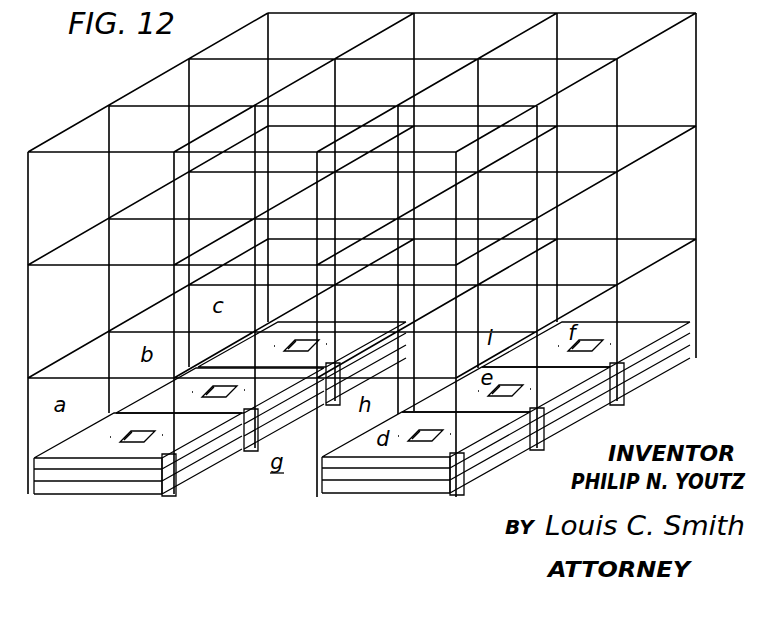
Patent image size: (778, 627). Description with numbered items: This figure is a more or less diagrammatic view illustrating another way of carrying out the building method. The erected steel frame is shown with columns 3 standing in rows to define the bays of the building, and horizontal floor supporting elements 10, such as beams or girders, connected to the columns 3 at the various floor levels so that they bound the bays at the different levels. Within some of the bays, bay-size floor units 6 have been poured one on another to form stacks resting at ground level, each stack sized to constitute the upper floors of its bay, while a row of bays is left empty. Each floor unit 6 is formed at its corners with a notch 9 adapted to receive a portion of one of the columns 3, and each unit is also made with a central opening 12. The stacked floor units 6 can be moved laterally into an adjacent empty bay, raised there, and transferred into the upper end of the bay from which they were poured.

The columns 3 is at (250, 70).
The horizontal floor supporting elements 10 is at (500, 28).
The floor units 6 is at (97, 484).
The notch 9 is at (181, 480).
The central opening 12 is at (118, 437).